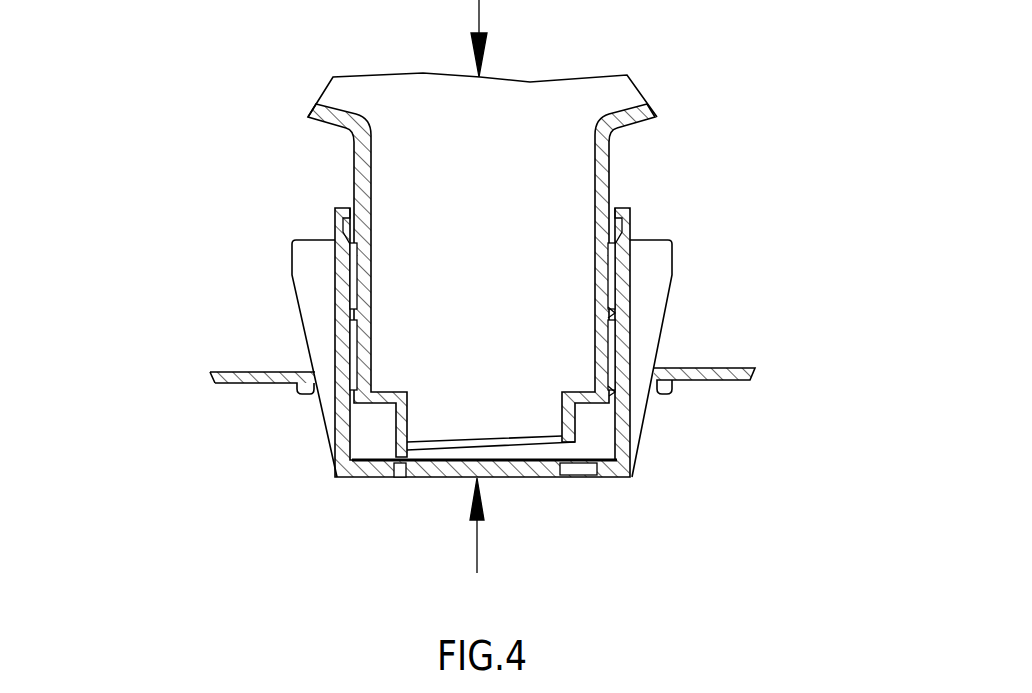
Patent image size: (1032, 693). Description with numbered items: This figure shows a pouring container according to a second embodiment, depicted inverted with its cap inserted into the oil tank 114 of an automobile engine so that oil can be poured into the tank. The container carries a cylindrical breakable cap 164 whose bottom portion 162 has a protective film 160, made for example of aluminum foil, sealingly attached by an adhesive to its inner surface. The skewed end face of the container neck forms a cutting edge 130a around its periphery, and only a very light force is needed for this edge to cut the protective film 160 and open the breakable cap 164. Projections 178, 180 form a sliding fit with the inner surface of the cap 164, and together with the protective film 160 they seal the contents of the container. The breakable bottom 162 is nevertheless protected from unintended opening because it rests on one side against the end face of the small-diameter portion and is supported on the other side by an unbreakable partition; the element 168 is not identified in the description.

The cap 168 is at (357, 158).
The protective film 160 is at (370, 462).
The bottom portion 162 is at (523, 463).
The cutting edge 130a is at (455, 443).
The cylindrical cap 164 is at (277, 421).
The oil tank 114 is at (718, 382).
The projection 178 is at (617, 313).
The projection 180 is at (615, 393).